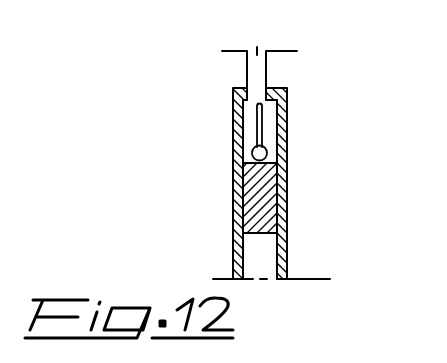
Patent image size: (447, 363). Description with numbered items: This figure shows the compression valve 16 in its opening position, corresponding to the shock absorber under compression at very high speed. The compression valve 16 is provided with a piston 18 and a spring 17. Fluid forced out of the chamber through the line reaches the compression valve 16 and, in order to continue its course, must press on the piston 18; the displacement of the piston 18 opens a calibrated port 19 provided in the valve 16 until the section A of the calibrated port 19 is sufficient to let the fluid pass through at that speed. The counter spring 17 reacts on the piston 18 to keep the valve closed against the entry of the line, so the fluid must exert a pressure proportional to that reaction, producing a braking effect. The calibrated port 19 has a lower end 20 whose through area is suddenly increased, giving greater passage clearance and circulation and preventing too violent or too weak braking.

The compression valve 16 is at (282, 212).
The spring 17 is at (258, 257).
The piston 18 is at (262, 203).
The calibrated port 19 is at (262, 112).
The lower end 20 is at (260, 153).
The section A is at (250, 133).